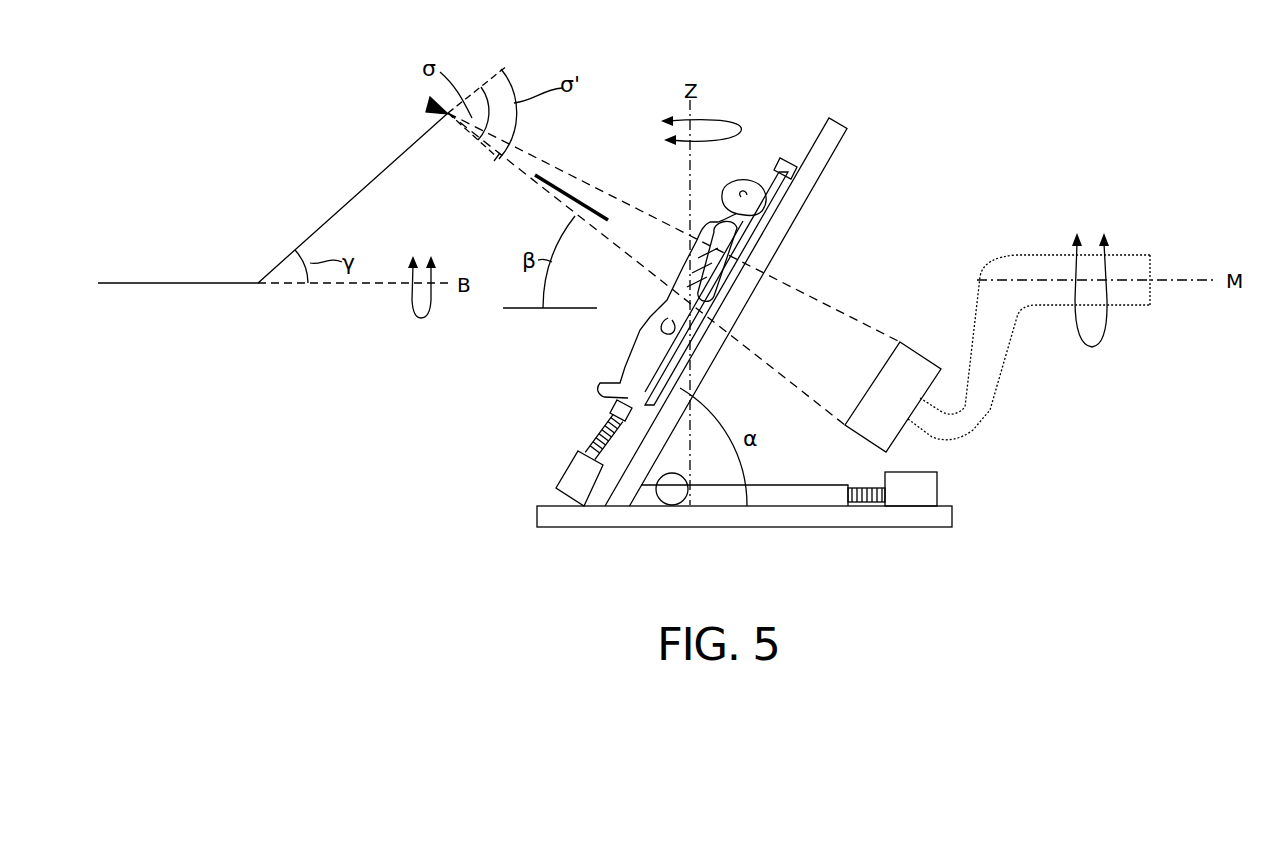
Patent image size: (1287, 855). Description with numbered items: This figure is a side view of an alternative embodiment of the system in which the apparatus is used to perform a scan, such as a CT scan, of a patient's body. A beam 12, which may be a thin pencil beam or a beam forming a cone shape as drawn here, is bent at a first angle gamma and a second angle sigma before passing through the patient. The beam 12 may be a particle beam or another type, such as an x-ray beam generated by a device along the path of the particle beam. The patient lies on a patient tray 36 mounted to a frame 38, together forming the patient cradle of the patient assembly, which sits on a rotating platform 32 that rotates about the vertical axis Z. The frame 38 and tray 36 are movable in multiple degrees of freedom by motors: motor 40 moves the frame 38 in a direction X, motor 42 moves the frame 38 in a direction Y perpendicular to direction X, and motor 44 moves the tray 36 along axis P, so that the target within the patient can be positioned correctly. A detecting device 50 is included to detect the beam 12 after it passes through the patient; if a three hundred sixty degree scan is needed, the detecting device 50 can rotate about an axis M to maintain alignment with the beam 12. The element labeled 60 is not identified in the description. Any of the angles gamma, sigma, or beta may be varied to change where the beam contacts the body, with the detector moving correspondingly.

The beam 12 is at (350, 201).
The X-ray source 60 is at (432, 110).
The patient tray 36 is at (783, 158).
The frame 38 is at (838, 126).
The detecting device 50 is at (912, 366).
The motor 42 is at (917, 488).
The rotating platform 32 is at (829, 526).
The motor 40 is at (668, 496).
The motor 44 is at (590, 488).